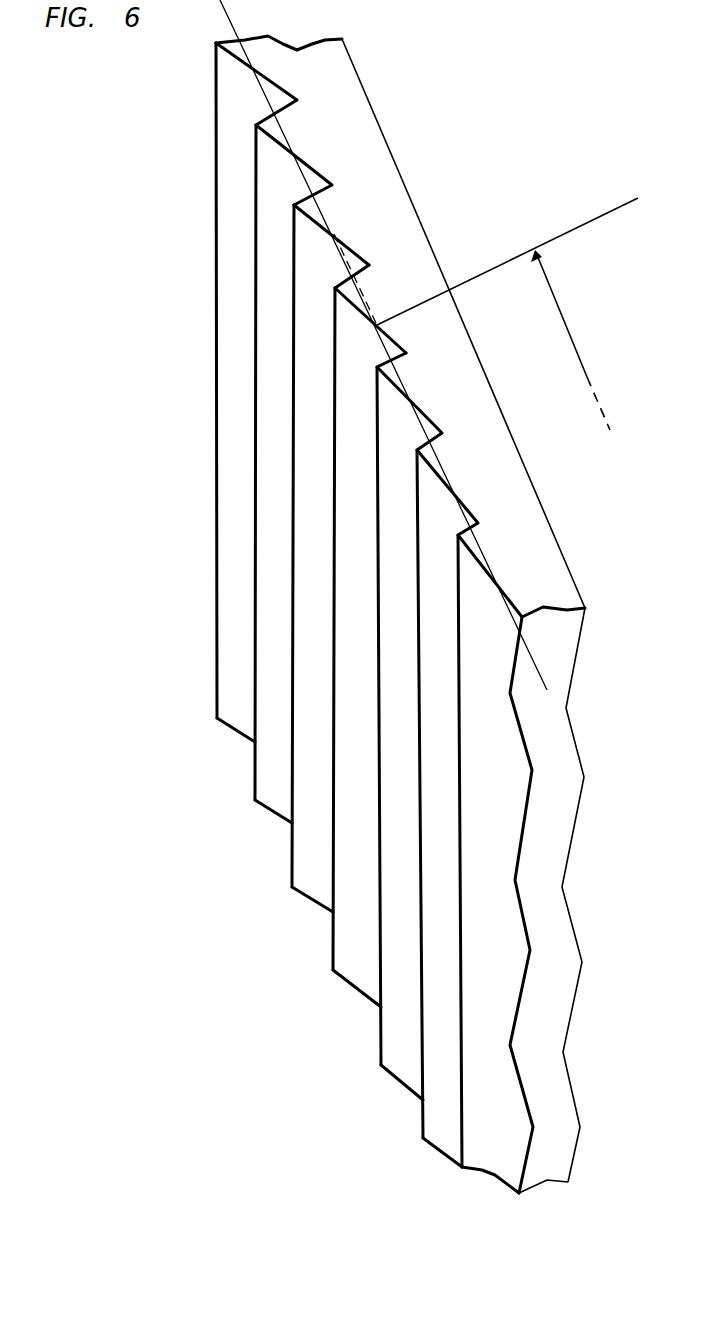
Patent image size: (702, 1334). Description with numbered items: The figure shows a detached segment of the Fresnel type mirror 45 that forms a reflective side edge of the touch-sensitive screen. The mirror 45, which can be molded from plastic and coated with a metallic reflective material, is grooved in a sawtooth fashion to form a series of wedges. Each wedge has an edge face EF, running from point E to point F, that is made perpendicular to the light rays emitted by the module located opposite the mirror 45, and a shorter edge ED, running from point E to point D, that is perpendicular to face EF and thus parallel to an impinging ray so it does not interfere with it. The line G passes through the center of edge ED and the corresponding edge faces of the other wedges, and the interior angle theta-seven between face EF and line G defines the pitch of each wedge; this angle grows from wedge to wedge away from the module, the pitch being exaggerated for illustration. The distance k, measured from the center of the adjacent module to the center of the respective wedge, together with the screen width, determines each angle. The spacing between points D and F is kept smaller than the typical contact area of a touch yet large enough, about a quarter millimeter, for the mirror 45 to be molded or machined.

The Fresnel type mirror 45 is at (352, 977).
The point D is at (339, 243).
The point E is at (344, 282).
The point F is at (375, 325).
The line G is at (532, 653).
The distance k K is at (568, 332).